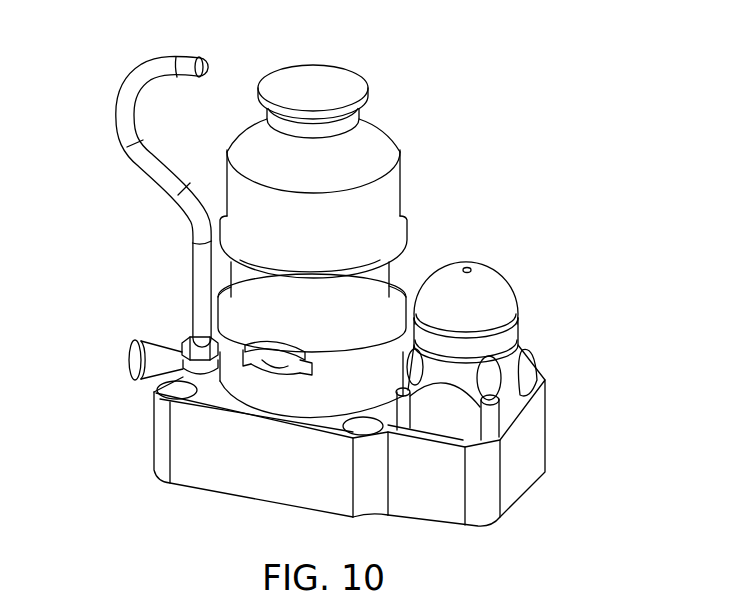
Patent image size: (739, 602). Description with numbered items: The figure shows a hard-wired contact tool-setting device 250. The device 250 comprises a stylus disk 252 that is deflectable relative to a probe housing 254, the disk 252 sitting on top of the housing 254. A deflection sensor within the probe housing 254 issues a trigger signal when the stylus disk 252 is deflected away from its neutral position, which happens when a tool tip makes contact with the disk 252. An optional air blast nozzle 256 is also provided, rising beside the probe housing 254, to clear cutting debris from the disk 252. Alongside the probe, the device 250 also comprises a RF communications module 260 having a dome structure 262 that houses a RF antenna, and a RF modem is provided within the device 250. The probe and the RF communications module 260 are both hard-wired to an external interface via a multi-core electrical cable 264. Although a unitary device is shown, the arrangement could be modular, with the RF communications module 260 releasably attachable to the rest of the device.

The hard-wired contact tool-setting device 250 is at (362, 270).
The stylus disk 252 is at (327, 85).
The probe housing 254 is at (356, 311).
The air blast nozzle 256 is at (158, 69).
The RF communications module 260 is at (542, 334).
The dome structure 262 is at (497, 283).
The multi-core electrical cable 264 is at (150, 362).